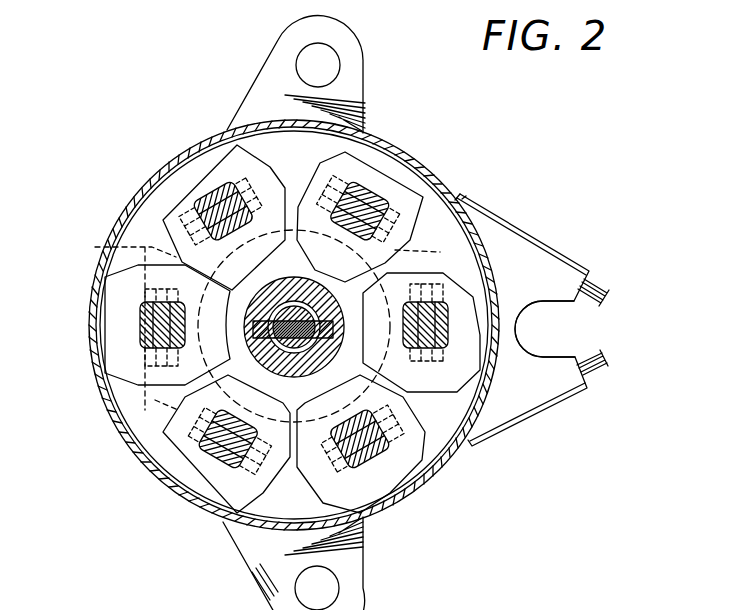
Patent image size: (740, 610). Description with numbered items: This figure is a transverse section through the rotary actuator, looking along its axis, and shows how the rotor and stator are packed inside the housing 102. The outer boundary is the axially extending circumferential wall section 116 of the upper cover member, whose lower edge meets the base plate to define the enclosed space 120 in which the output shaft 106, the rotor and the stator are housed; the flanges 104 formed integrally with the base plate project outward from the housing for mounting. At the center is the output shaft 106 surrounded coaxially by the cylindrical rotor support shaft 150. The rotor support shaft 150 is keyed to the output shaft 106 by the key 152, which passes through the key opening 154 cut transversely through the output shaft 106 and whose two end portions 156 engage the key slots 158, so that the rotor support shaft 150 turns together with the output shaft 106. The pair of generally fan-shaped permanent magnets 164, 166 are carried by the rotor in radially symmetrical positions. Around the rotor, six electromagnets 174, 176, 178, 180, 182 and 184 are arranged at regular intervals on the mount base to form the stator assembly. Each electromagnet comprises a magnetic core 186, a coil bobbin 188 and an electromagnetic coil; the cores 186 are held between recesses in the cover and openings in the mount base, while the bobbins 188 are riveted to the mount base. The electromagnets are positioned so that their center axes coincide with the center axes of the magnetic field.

The housing 102 is at (428, 156).
The flanges 104 is at (365, 70).
The output shaft 106 is at (140, 457).
The circumferential wall section 116 is at (112, 224).
The enclosed space 120 is at (472, 213).
The rotor support shaft 150 is at (210, 192).
The key 152 is at (297, 305).
The key opening 154 is at (293, 355).
The end portions 156 is at (285, 332).
The key slots 158 is at (290, 310).
The permanent magnet 164 is at (95, 247).
The permanent magnet 166 is at (445, 258).
The electromagnet 174 is at (228, 198).
The electromagnet 176 is at (140, 318).
The electromagnet 178 is at (212, 445).
The electromagnet 180 is at (387, 466).
The electromagnet 182 is at (336, 329).
The electromagnet 184 is at (432, 180).
The magnetic core 186 is at (232, 462).
The coil bobbin 188 is at (153, 193).